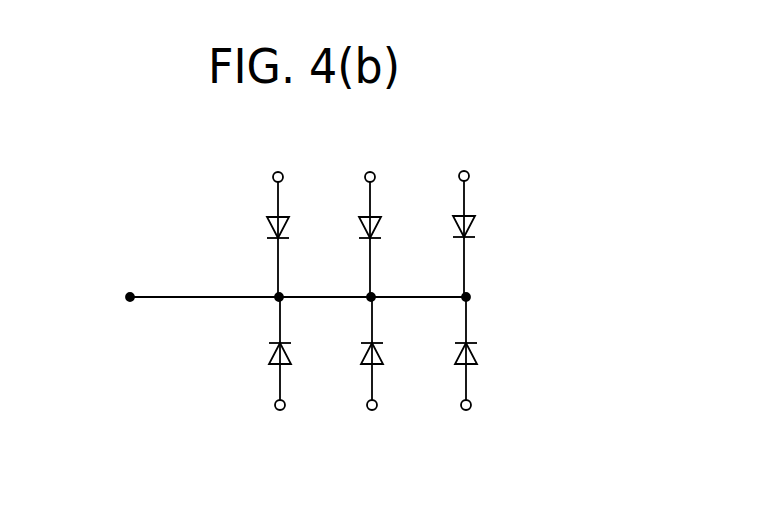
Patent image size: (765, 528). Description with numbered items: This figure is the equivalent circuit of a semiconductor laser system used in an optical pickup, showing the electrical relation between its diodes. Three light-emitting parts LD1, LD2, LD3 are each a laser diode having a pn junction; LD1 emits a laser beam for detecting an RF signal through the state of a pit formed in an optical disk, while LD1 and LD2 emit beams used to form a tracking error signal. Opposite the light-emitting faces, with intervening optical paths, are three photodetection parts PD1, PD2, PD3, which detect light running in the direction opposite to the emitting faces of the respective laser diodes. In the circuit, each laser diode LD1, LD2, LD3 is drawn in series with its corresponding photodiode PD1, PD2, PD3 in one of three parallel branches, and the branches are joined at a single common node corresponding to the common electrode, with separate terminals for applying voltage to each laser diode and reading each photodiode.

The light-emitting part LD1 is at (367, 218).
The light-emitting part LD2 is at (276, 219).
The light-emitting part LD3 is at (470, 217).
The photodetection part PD1 is at (378, 364).
The photodetection part PD2 is at (273, 367).
The photodetection part PD3 is at (472, 364).